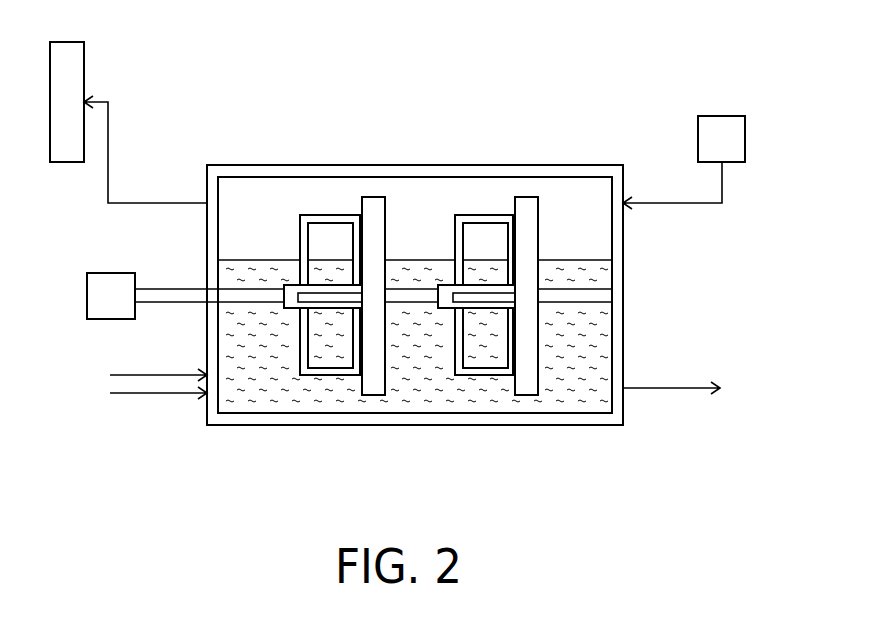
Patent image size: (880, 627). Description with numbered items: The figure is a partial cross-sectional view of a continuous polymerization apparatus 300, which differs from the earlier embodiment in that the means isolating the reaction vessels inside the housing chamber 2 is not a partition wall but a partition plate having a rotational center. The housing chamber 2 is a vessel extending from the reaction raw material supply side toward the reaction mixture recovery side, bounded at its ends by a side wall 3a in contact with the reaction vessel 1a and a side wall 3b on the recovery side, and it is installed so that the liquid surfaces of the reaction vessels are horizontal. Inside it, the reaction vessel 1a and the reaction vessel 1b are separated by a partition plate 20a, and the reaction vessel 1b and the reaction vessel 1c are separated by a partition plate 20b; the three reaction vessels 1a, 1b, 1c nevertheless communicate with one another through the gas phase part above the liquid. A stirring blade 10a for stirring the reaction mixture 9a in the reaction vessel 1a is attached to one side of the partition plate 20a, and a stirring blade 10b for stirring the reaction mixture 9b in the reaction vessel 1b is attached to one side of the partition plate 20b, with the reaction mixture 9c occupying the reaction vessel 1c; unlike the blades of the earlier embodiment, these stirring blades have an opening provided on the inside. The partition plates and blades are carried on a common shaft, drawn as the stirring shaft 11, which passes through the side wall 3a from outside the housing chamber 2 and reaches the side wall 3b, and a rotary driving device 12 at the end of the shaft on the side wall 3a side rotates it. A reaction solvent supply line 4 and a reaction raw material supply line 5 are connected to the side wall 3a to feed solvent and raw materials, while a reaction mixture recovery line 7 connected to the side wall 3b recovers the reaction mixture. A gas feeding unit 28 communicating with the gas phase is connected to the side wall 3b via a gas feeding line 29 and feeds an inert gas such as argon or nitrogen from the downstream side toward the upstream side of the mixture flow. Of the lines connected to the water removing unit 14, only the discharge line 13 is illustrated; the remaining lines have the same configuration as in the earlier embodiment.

The continuous polymerization apparatus 300 is at (583, 82).
The housing chamber 2 is at (630, 154).
The reaction vessel 1a is at (277, 195).
The reaction vessel 1b is at (427, 195).
The reaction vessel 1c is at (575, 195).
The stirring blade 10a is at (330, 220).
The stirring blade 10b is at (486, 220).
The partition plate 20a is at (373, 205).
The partition plate 20b is at (525, 205).
The reaction mixture 9a is at (267, 398).
The reaction mixture 9b is at (405, 398).
The reaction mixture 9c is at (567, 398).
The stirring shaft 11 is at (173, 288).
The rotary driving device 12 is at (113, 272).
The discharge line 13 is at (160, 202).
The water removing unit 14 is at (84, 65).
The reaction solvent supply line 4 is at (160, 373).
The reaction raw material supply line 5 is at (128, 394).
The side wall 3a is at (205, 400).
The side wall 3b is at (628, 400).
The reaction mixture recovery line 7 is at (675, 386).
The gas feeding unit 28 is at (722, 115).
The gas feeding line 29 is at (672, 202).